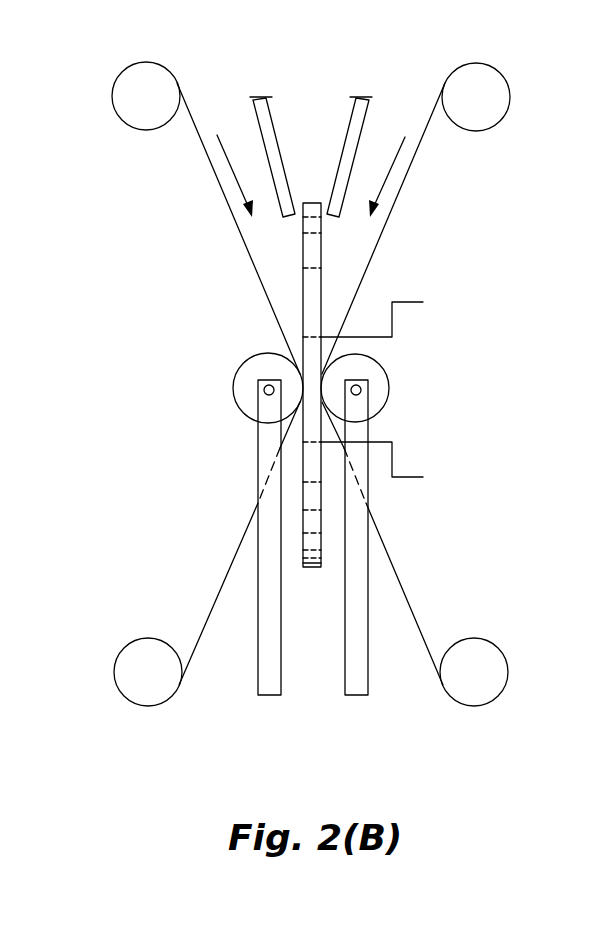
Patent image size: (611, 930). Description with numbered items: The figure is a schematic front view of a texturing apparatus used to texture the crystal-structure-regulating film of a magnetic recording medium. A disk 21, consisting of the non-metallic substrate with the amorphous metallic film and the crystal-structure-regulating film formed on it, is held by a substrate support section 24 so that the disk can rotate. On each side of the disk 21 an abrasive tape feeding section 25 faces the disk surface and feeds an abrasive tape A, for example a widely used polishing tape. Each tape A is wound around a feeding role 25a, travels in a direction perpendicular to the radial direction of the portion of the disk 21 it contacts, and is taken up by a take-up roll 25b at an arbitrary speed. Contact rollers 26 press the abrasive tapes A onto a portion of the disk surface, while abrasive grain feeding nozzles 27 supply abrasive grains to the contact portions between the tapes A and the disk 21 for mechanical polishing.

The disk 21 is at (312, 568).
The substrate support section 24 is at (357, 337).
The abrasive tape feeding section 25 is at (100, 85).
The feeding role 25a is at (135, 118).
The take-up roll 25b is at (132, 662).
The contact roller 26 is at (240, 380).
The abrasive grain feeding nozzle 27 is at (250, 126).
The abrasive tape A is at (228, 205).